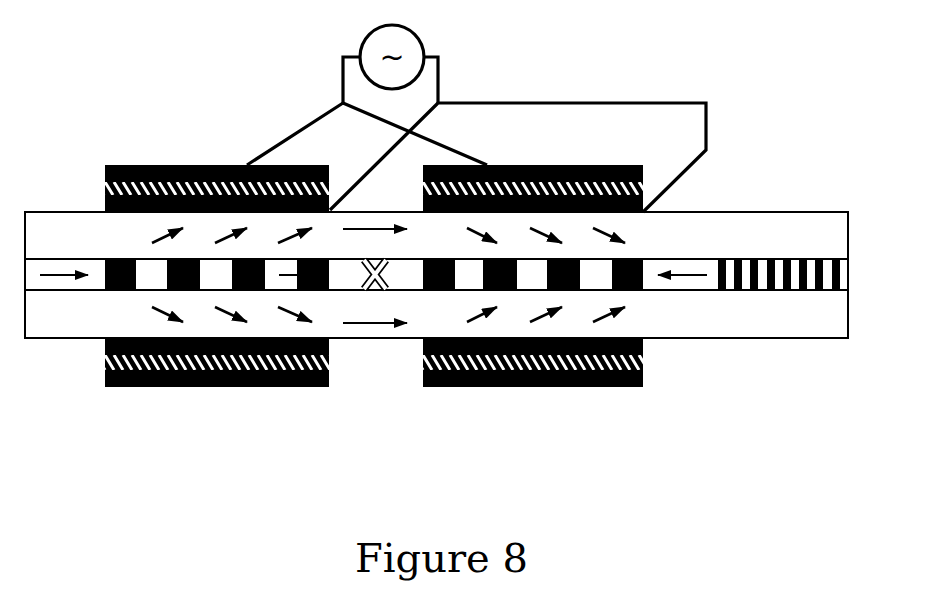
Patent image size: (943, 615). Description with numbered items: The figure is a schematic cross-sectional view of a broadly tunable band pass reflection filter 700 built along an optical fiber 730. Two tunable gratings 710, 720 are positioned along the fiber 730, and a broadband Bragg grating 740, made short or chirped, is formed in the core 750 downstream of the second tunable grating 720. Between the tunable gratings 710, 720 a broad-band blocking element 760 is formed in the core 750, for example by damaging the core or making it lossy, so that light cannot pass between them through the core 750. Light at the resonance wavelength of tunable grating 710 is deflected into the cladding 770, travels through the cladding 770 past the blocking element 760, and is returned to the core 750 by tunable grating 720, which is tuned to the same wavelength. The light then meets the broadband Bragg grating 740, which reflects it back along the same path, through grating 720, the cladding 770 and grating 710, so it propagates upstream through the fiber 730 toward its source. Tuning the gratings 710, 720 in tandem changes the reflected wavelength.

The electrokinetic micropump device 700 is at (185, 102).
The tunable grating 710 is at (88, 370).
The tunable grating 720 is at (677, 392).
The optical fiber 730 is at (800, 212).
The broadband Bragg grating 740 is at (743, 277).
The core 750 is at (842, 283).
The broad-band blocking element 760 is at (377, 291).
The cladding 770 is at (75, 228).